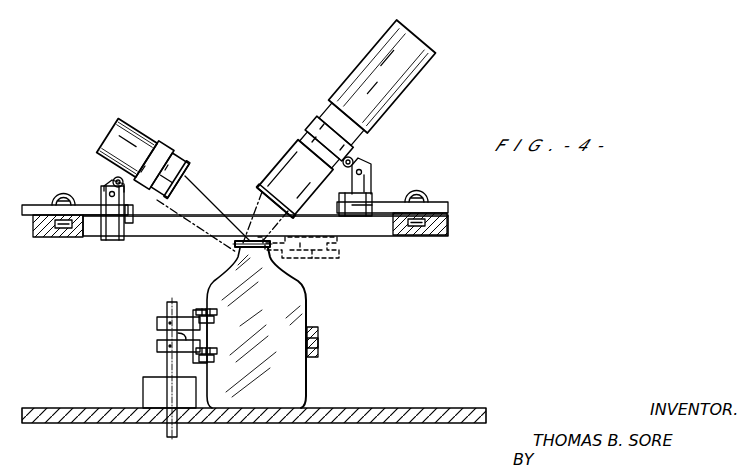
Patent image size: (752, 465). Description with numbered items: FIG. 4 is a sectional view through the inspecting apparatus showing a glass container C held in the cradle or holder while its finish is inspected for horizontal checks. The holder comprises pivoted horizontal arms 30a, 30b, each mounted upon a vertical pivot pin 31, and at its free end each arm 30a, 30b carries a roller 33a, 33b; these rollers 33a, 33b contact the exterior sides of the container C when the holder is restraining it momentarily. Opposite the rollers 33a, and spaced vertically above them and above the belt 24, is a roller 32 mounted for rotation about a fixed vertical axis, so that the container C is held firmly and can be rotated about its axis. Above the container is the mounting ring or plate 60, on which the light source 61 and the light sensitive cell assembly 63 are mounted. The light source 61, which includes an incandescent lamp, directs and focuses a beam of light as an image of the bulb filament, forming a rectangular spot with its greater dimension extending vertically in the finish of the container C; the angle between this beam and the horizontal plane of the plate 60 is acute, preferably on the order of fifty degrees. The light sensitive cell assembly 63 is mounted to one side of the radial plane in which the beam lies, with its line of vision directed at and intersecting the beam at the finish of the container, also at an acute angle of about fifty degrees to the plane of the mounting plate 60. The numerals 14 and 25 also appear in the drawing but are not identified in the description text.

The base plate / floor 14 is at (342, 410).
The belt 24 is at (318, 333).
The label patch marking 25 is at (320, 347).
The pivoted horizontal arm 30a is at (186, 318).
The pivoted horizontal arm 30b is at (176, 335).
The vertical pivot pin 31 is at (167, 433).
The roller 32 is at (280, 243).
The roller 33a is at (203, 309).
The roller 33b is at (200, 361).
The mounting ring 60 is at (448, 230).
The light source 61 is at (124, 136).
The light sensitive cell assembly 63 is at (417, 43).
The container C is at (293, 295).